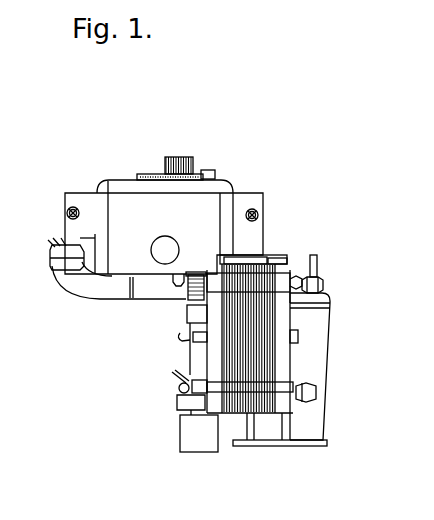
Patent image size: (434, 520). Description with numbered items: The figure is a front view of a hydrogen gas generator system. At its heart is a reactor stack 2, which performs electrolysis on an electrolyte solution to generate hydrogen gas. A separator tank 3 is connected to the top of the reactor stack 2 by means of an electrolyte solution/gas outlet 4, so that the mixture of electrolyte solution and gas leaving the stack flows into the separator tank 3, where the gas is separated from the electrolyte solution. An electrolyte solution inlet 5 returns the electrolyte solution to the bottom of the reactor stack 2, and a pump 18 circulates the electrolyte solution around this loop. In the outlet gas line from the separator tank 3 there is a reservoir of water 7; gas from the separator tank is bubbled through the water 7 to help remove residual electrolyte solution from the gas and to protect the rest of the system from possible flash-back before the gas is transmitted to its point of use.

The separator tank 3 is at (193, 212).
The reactor stack 2 is at (316, 268).
The reservoir of water 7 is at (315, 337).
The electrolyte solution/gas outlet 4 is at (188, 292).
The electrolyte solution inlet 5 is at (178, 388).
The pump 18 is at (203, 440).